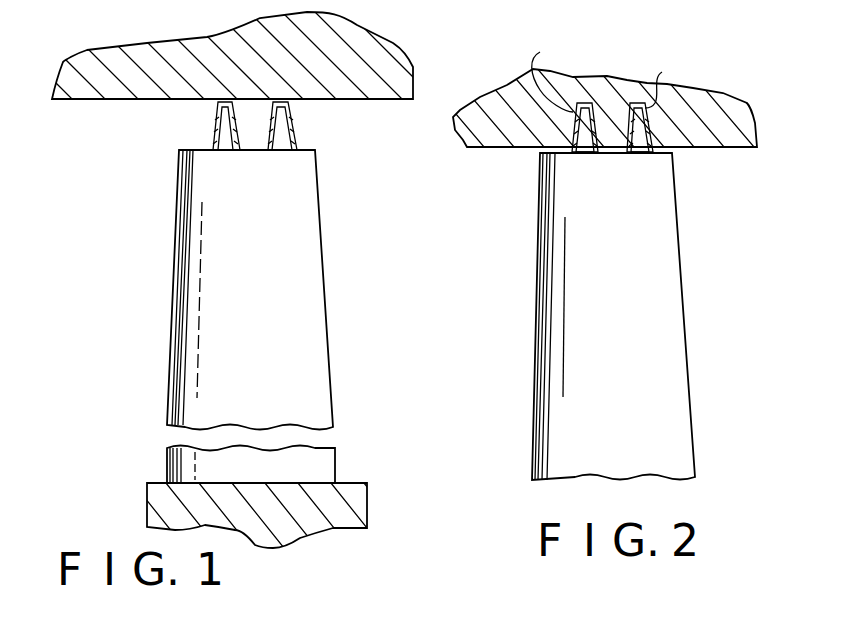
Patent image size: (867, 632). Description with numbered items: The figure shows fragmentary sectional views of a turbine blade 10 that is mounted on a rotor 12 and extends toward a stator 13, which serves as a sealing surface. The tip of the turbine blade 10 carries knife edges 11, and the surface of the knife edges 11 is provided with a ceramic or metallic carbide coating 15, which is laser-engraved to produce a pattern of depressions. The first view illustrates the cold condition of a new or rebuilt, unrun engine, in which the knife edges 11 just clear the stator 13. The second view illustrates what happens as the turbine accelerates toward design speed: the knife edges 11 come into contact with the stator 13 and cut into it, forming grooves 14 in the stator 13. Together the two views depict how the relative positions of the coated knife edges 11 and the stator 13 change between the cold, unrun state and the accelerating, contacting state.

In FIG. 1, the turbine blade 10 is at (256, 297).
In FIG. 2, the turbine blade 10 is at (617, 292).
In FIG. 1, the knife edges 11 is at (222, 140).
In FIG. 1, the rotor 12 is at (147, 504).
In FIG. 1, the stator 13 is at (377, 43).
In FIG. 2, the stator 13 is at (733, 93).
In FIG. 2, the grooves 14 is at (605, 75).
In FIG. 1, the ceramic or metallic carbide coating 15 is at (215, 123).
In FIG. 2, the ceramic or metallic carbide coating 15 is at (578, 102).